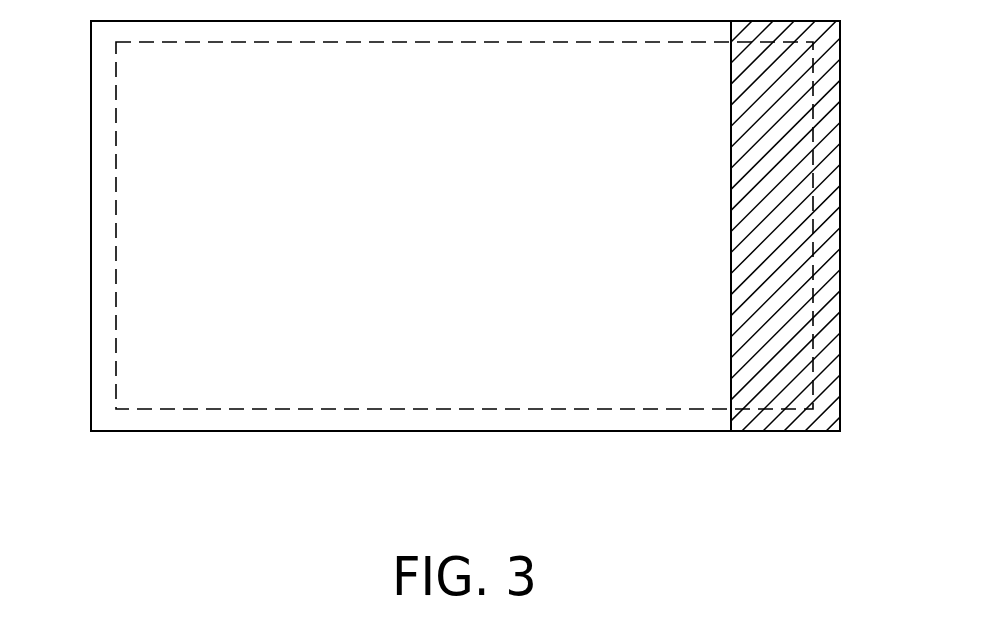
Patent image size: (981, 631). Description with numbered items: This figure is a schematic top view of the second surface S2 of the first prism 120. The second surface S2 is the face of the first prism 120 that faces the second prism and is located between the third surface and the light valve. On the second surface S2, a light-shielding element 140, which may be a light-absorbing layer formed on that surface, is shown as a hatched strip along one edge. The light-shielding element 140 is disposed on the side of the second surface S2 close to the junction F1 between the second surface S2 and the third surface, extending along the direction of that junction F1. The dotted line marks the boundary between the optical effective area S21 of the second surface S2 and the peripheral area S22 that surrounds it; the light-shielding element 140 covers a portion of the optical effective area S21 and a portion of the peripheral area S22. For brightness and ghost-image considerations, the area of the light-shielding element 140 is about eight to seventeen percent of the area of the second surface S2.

The first prism 120 is at (91, 226).
The light-shielding element 140 is at (792, 168).
The junction F1 is at (850, 218).
The second surface S2 is at (312, 506).
The optical effective area S21 is at (230, 386).
The peripheral area S22 is at (296, 424).